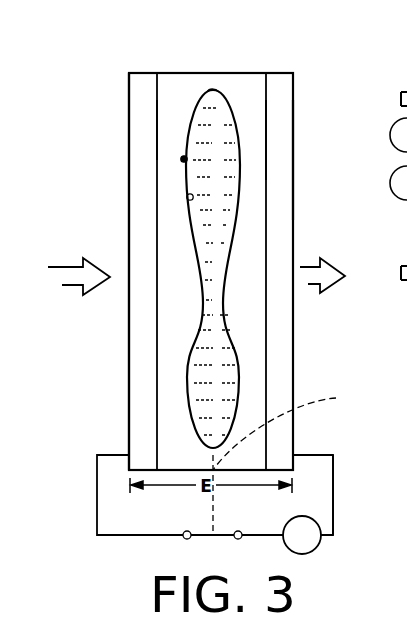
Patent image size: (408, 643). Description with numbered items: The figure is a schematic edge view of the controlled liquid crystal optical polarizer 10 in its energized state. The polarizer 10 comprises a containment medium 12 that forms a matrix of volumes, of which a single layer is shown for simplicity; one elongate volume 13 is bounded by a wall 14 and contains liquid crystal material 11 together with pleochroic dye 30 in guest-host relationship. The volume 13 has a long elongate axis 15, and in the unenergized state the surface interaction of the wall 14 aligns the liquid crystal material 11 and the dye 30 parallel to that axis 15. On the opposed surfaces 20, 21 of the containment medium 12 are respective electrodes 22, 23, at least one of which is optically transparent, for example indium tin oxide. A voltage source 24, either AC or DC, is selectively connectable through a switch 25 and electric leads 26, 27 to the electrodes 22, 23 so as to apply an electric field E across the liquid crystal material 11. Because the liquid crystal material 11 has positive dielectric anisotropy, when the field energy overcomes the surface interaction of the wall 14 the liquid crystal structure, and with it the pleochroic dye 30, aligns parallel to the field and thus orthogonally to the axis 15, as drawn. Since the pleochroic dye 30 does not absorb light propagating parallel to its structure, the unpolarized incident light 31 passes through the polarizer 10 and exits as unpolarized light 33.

The controlled liquid crystal optical polarizer 10 is at (100, 70).
The liquid crystal material 11 is at (217, 118).
The containment medium 12 is at (174, 83).
The volume 13 is at (182, 160).
The wall 14 is at (187, 198).
The elongate axis 15 is at (289, 427).
The surface 20 is at (156, 126).
The surface 21 is at (266, 142).
The electrode 22 is at (129, 155).
The electrode 23 is at (295, 190).
The voltage source 24 is at (305, 554).
The switch 25 is at (213, 540).
The electric lead 26 is at (100, 535).
The electric lead 27 is at (333, 490).
The pleochroic dye 30 is at (214, 88).
The incident light 31 is at (62, 286).
The unpolarized light 33 is at (308, 285).